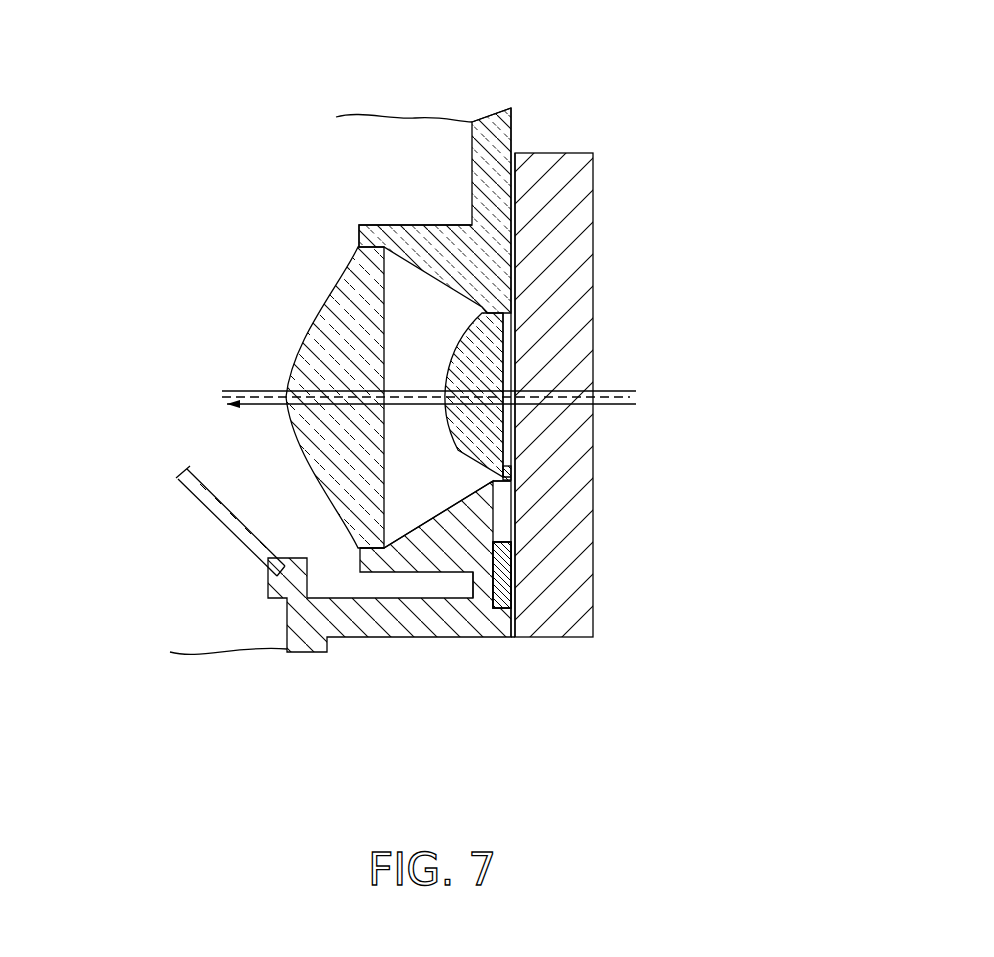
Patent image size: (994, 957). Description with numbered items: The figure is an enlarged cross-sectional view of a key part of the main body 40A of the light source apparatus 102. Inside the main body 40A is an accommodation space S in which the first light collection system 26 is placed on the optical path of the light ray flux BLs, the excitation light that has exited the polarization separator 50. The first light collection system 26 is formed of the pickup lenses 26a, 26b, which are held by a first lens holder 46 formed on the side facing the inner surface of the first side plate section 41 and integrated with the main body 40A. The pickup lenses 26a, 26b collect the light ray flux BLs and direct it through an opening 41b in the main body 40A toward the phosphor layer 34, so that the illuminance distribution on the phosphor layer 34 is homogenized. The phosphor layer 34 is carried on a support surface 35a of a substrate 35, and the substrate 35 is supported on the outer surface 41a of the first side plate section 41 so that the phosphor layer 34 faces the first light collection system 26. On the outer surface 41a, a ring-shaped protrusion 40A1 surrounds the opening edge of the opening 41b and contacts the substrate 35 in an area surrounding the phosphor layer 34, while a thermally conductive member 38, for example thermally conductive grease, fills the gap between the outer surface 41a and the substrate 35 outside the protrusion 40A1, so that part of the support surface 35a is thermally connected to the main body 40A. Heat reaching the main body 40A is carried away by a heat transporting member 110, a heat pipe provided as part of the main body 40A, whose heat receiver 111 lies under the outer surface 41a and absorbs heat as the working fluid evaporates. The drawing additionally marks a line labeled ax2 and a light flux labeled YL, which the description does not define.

The light source apparatus 102 is at (606, 104).
The substrate 35 is at (560, 218).
The first side plate section 41 is at (467, 118).
The outer surface 41a is at (516, 110).
The opening 41b is at (513, 467).
The first lens holder 46 is at (390, 214).
The accommodation space S is at (271, 303).
The phosphor layer 34 is at (508, 390).
The main body 40A is at (334, 650).
The protrusion 40A1 is at (508, 290).
The support surface 35a is at (515, 520).
The heat receiver 111 is at (515, 584).
The heat transporting member 110 is at (502, 575).
The thermally conductive member 38 is at (513, 640).
The first light collection system 26 is at (455, 722).
The pickup lens 26a is at (332, 488).
The pickup lens 26b is at (477, 440).
The optical axis ax2 is at (630, 396).
The light ray flux BLs is at (253, 391).
The yellow light YL is at (253, 404).
The polarization separator 50 is at (215, 522).